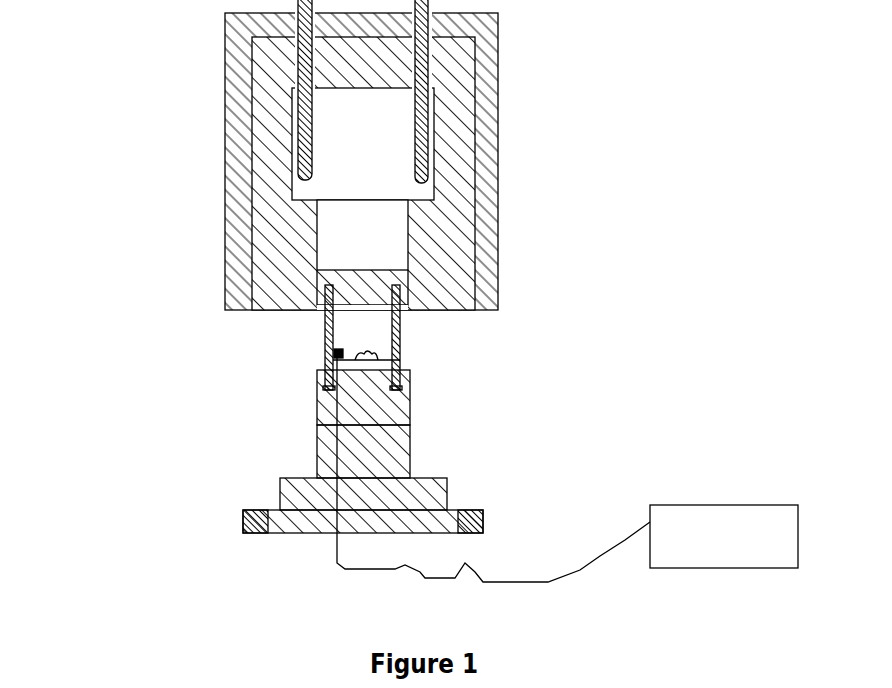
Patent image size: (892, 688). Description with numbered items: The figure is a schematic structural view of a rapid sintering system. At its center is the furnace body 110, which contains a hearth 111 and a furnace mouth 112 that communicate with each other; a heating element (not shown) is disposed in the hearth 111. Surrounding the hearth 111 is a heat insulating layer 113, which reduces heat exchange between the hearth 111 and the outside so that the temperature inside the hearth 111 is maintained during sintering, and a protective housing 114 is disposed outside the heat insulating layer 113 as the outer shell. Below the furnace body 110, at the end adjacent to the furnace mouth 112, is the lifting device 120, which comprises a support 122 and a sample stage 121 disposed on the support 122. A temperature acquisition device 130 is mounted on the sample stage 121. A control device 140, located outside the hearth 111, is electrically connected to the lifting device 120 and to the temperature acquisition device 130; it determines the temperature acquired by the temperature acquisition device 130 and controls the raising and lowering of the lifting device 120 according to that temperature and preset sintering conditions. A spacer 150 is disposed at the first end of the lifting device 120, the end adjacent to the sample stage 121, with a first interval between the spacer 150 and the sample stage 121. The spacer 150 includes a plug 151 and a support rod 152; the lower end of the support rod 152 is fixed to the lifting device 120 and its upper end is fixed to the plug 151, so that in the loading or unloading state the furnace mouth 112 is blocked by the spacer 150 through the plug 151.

The furnace body 110 is at (266, 155).
The hearth 111 is at (357, 132).
The furnace mouth 112 is at (357, 247).
The heat insulating layer 113 is at (275, 63).
The protective housing 114 is at (250, 183).
The lifting device 120 is at (285, 451).
The sample stage 121 is at (317, 377).
The support 122 is at (317, 427).
The temperature acquisition device 130 is at (330, 352).
The control device 140 is at (708, 504).
The spacer 150 is at (494, 307).
The plug 151 is at (338, 288).
The support rod 152 is at (403, 342).